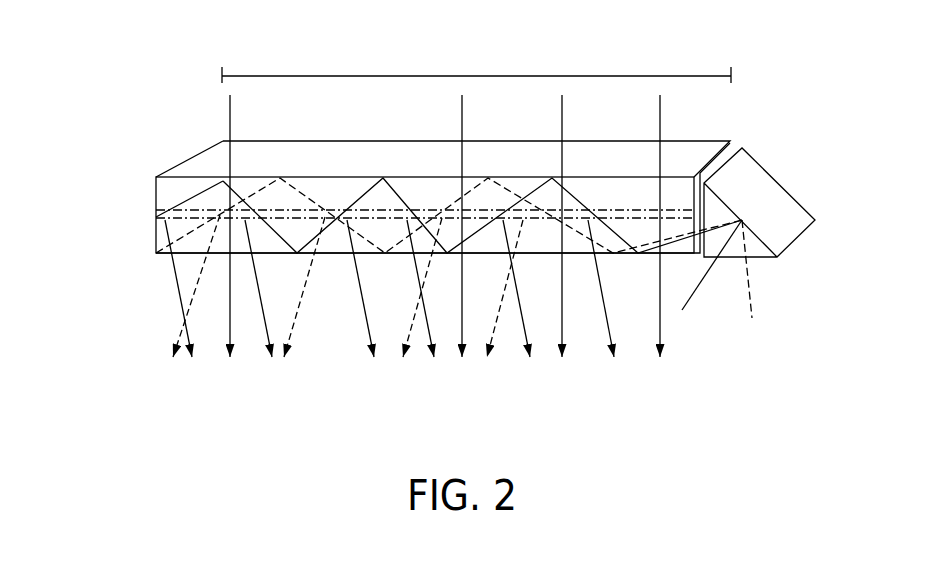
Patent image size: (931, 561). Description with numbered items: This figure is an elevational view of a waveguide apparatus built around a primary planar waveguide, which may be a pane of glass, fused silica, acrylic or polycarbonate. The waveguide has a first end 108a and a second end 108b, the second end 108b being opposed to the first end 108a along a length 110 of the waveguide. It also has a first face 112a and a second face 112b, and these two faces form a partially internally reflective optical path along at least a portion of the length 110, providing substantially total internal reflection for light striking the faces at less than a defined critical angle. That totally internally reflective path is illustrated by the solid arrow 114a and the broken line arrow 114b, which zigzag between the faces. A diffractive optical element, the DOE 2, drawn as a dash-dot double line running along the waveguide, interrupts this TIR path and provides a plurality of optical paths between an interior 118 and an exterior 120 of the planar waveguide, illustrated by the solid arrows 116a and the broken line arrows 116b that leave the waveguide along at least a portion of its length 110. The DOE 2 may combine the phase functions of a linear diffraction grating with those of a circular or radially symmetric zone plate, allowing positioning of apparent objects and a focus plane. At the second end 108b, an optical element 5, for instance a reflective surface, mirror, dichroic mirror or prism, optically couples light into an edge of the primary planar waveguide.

The DOE 2 is at (157, 212).
The optical element 5 is at (772, 200).
The first end 108a is at (177, 163).
The second end 108b is at (712, 157).
The length 110 is at (480, 75).
The first face 112a is at (342, 245).
The second face 112b is at (204, 157).
The arrow 114a is at (358, 198).
The broken line arrow 114b is at (507, 188).
The arrows 116a is at (603, 320).
The broken line arrows 116b is at (495, 325).
The interior 118 is at (627, 194).
The exterior 120 is at (730, 378).